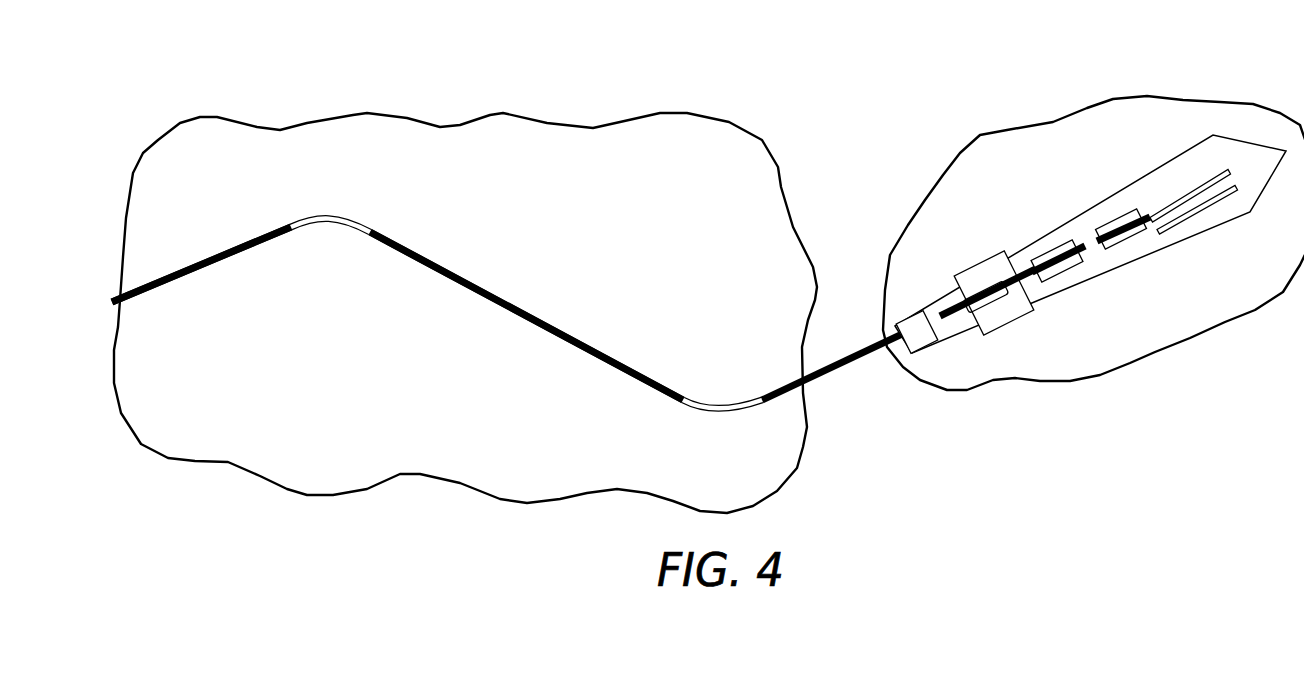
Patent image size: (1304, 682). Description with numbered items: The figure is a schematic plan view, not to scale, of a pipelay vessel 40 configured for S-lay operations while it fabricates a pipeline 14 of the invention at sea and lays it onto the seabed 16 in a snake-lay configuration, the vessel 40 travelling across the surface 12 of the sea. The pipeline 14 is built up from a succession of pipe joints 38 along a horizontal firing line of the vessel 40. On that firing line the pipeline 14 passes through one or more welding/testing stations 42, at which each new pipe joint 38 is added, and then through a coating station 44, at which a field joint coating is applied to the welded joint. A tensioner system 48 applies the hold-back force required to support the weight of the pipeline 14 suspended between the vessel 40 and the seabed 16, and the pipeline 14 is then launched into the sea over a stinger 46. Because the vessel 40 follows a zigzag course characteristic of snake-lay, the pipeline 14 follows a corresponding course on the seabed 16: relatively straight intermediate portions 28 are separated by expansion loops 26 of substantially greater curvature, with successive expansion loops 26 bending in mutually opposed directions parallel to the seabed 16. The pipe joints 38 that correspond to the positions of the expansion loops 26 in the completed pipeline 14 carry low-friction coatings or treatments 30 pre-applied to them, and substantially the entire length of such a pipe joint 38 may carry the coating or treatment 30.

The surface of the sea 12 is at (1143, 92).
The pipeline 14 is at (856, 388).
The seabed 16 is at (512, 122).
The expansion loop 26 is at (329, 233).
The intermediate portion 28 is at (207, 270).
The low-friction coating or treatment 30 is at (325, 215).
The pipe joint 38 is at (1146, 211).
The pipelay vessel 40 is at (1246, 148).
The welding/testing station 42 is at (1125, 260).
The coating station 44 is at (1060, 280).
The stinger 46 is at (903, 323).
The tensioner system 48 is at (992, 284).